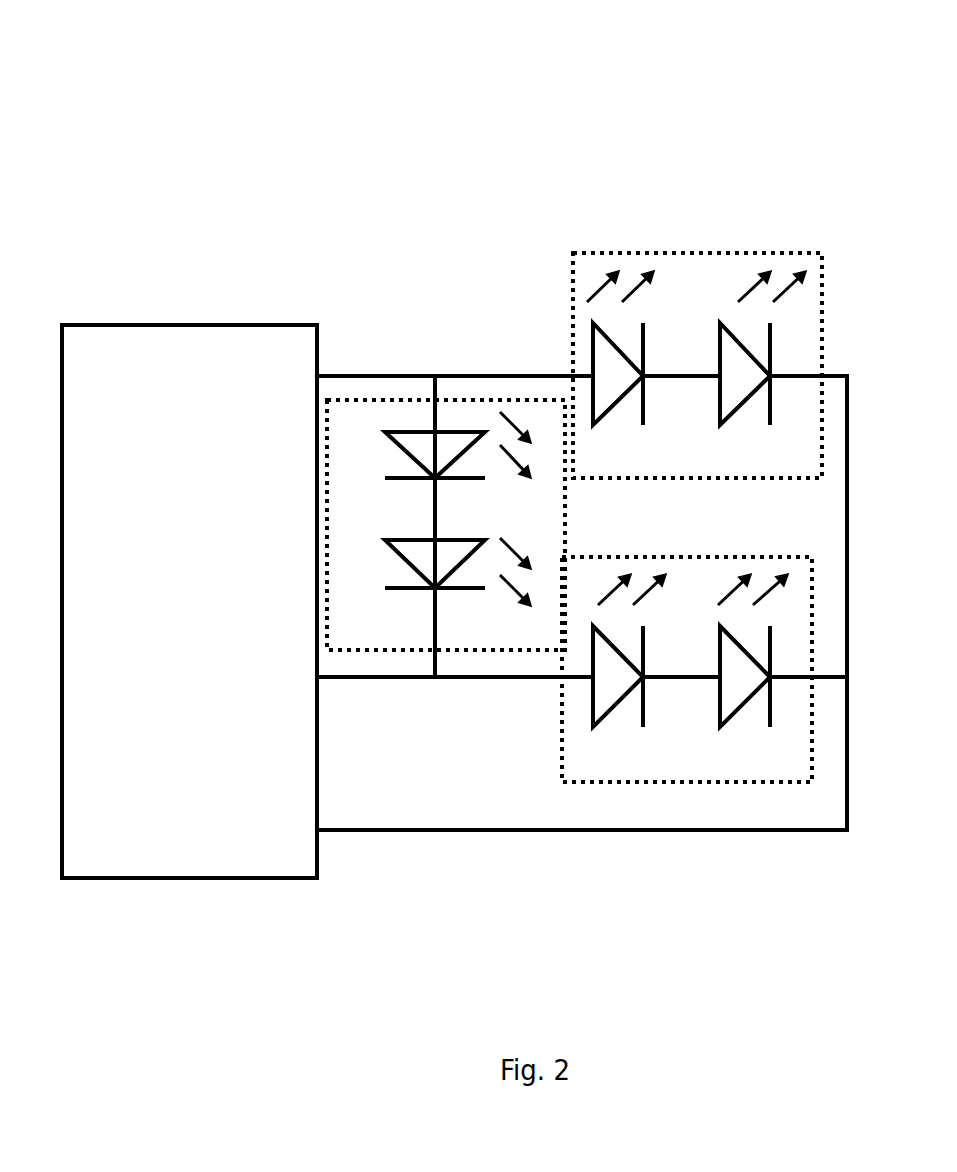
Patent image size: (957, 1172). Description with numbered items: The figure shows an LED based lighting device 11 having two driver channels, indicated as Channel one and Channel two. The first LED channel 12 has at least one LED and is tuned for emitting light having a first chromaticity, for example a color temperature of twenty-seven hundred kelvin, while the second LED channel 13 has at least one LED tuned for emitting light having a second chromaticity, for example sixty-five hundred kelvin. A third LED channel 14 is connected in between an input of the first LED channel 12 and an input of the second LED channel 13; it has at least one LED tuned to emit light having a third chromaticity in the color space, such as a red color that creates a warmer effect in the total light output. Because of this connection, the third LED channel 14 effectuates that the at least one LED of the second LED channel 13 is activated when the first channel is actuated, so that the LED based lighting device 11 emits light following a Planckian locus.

The LED based lighting device 11 is at (375, 202).
The first LED channel 12 is at (713, 255).
The second LED channel 13 is at (748, 783).
The third LED channel 14 is at (480, 400).